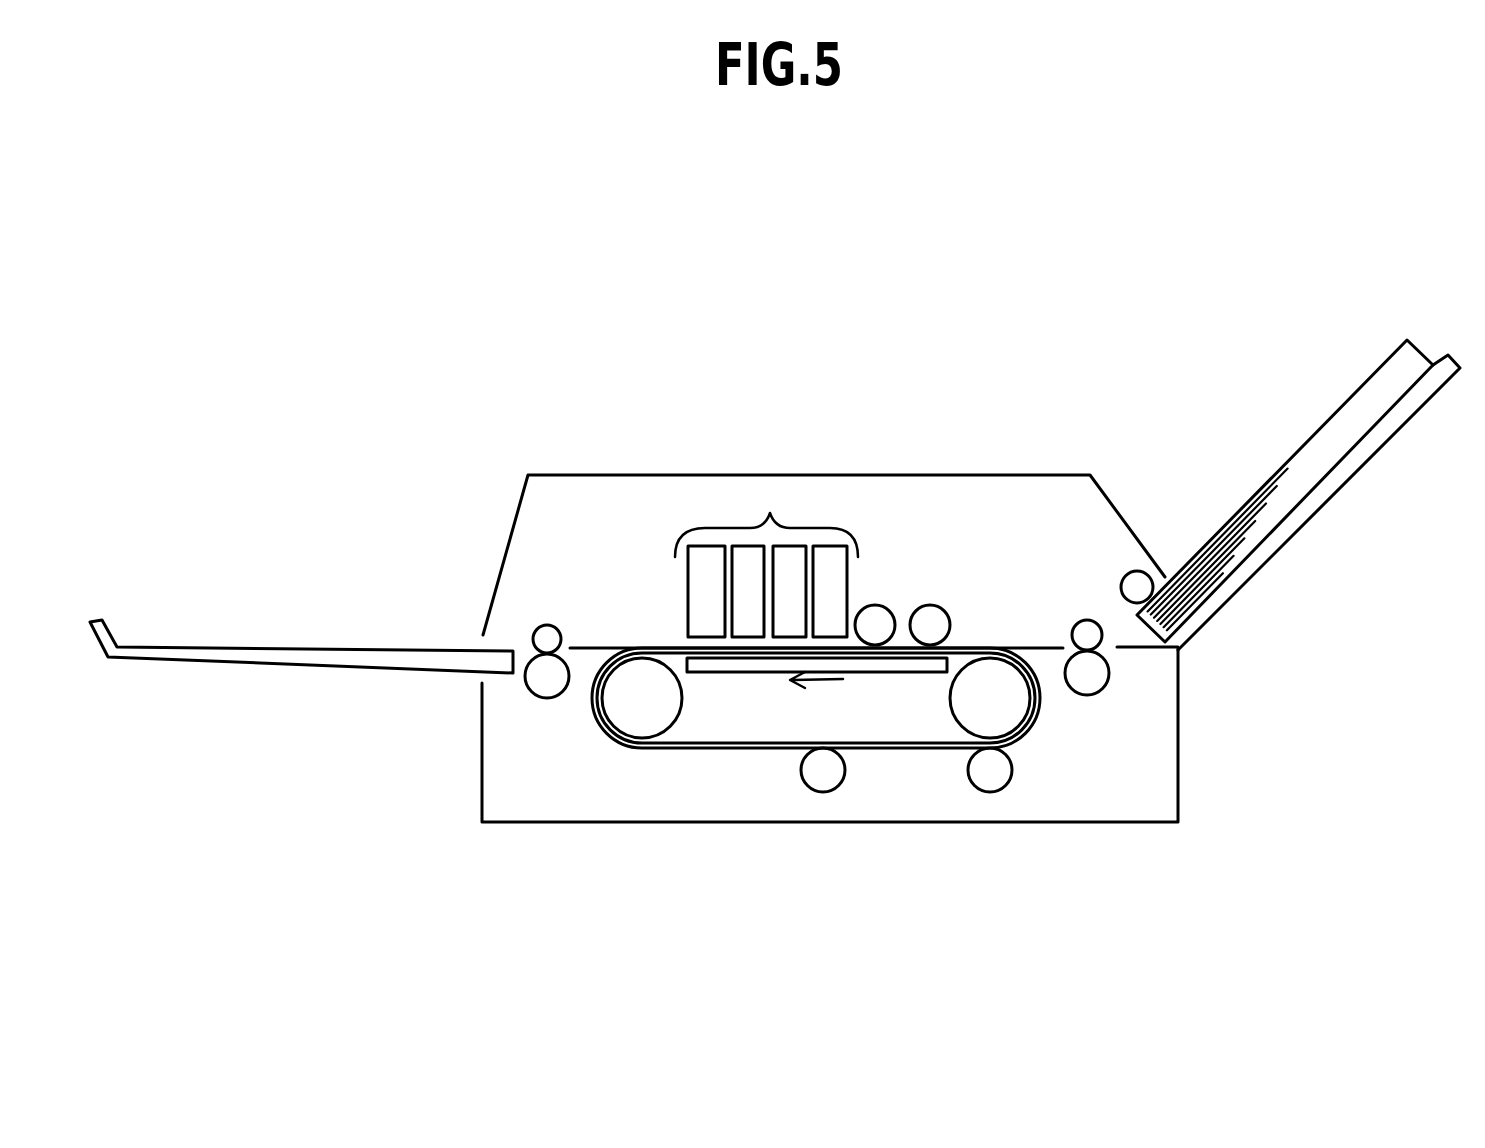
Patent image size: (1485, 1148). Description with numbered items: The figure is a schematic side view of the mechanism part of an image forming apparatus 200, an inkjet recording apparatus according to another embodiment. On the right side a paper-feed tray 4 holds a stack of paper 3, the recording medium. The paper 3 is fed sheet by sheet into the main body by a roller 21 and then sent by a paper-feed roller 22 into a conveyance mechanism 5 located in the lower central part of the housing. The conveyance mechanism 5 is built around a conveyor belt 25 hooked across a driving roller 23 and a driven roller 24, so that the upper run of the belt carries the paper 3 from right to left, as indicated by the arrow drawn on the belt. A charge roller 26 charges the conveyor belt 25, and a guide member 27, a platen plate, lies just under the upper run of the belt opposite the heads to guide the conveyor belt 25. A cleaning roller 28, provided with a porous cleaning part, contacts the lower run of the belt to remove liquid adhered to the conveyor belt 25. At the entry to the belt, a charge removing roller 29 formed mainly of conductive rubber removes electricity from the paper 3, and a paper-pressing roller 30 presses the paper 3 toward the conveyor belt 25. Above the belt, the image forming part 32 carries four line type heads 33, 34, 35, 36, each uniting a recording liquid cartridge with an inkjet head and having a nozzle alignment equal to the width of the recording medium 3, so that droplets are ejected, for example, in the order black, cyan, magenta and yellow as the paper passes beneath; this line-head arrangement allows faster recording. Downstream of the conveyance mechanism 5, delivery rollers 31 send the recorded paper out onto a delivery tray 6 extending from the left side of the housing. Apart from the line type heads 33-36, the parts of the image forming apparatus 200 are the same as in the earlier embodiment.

The image forming apparatus 200 is at (598, 222).
The paper 3 is at (1327, 428).
The paper-feed tray 4 is at (1340, 475).
The conveyance mechanism 5 is at (705, 795).
The delivery tray 6 is at (313, 657).
The roller 21 is at (1138, 583).
The paper-feed roller 22 is at (1093, 633).
The driving roller 23 is at (1010, 705).
The driven roller 24 is at (638, 722).
The conveyor belt 25 is at (867, 650).
The charge roller 26 is at (992, 780).
The guide member 27 is at (775, 662).
The cleaning roller 28 is at (825, 778).
The charge removing roller 29 is at (932, 622).
The paper-pressing roller 30 is at (875, 620).
The delivery rollers 31 is at (538, 640).
The image forming part 32 is at (770, 513).
The line type head 33 is at (833, 552).
The line type head 34 is at (792, 552).
The line type head 35 is at (747, 552).
The line type head 36 is at (707, 552).